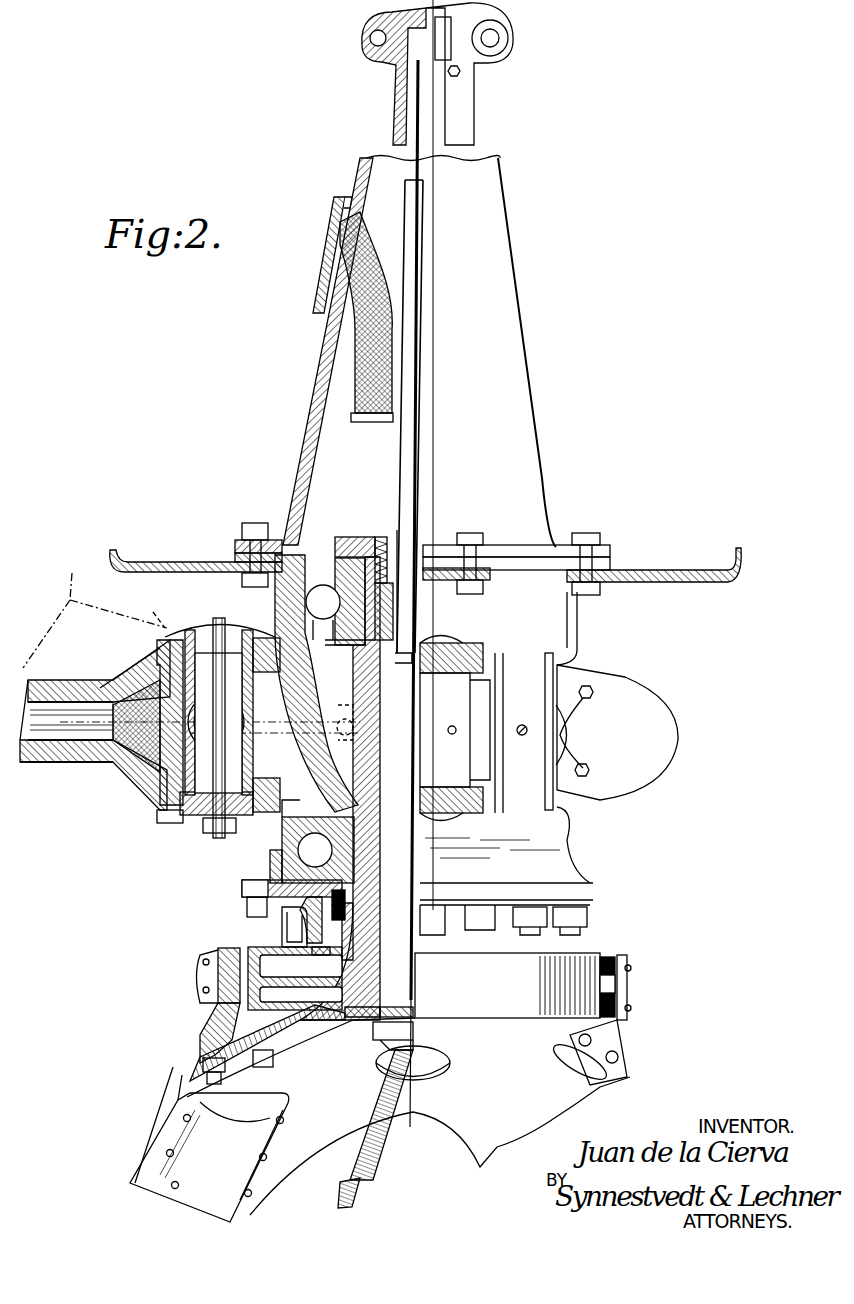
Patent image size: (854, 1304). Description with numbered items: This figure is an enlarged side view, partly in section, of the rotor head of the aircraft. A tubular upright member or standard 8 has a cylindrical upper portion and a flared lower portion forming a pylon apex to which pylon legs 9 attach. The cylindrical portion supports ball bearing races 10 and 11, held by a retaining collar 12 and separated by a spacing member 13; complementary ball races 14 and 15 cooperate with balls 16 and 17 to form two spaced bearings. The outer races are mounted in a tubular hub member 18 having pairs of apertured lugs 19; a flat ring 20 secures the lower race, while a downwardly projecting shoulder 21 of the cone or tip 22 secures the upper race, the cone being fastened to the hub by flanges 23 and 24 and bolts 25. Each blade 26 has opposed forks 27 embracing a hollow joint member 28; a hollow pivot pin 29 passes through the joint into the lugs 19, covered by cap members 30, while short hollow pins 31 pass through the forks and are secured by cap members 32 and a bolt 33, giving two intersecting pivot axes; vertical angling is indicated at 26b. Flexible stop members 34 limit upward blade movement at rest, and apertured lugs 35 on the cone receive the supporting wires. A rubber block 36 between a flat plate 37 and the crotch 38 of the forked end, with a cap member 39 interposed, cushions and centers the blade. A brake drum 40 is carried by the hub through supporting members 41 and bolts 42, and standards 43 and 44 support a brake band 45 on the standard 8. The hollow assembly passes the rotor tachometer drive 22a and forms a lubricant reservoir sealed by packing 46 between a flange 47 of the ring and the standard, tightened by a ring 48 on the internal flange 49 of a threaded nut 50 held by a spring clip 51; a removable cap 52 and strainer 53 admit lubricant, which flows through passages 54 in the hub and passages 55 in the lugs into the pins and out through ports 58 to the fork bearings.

The upright member or standard 8 is at (330, 1030).
The pylon struts or legs 9 is at (255, 1105).
The ball bearing race 10 is at (337, 560).
The ball bearing race 11 is at (355, 830).
The retaining collar or ring 12 is at (381, 537).
The spacing member 13 is at (350, 808).
The complementary ball race 14 is at (322, 595).
The complementary ball race 15 is at (270, 860).
The balls 16 is at (322, 640).
The balls 17 is at (315, 845).
The hub member 18 is at (322, 768).
The apertured lugs 19 is at (545, 660).
The flat ring 20 is at (355, 888).
The downwardly projecting shoulder 21 is at (290, 560).
The cone or tip 22 is at (467, 103).
The rotor tachometer drive 22a is at (420, 462).
The flange 23 is at (237, 546).
The flange 24 is at (235, 558).
The bolts 25 is at (255, 523).
The blade member 26 is at (33, 753).
The vertical angling of blade 26b is at (95, 610).
The apertured forks 27 is at (480, 650).
The hollow joint member 28 is at (128, 785).
The hollow pivot pin 29 is at (262, 742).
The cap members 30 is at (640, 700).
The hollow pivot pins 31 is at (216, 630).
The cap members 32 is at (257, 638).
The bolt 33 is at (219, 630).
The flexible stop members 34 is at (130, 560).
The apertured lugs 35 is at (370, 46).
The resilient block 36 is at (120, 762).
The flat plate 37 is at (170, 660).
The crotch or base portion 38 is at (112, 690).
The cap member 39 is at (95, 733).
The brake drum 40 is at (295, 978).
The supporting members 41 is at (282, 932).
The bolts 42 is at (243, 890).
The standard 43 is at (218, 1032).
The standard 44 is at (620, 1025).
The brake band 45 is at (515, 985).
The packing 46 is at (345, 895).
The downwardly extending flange 47 is at (345, 912).
The ring 48 is at (358, 958).
The internal flange 49 is at (376, 990).
The ring or nut 50 is at (318, 947).
The spring clip 51 is at (300, 915).
The removable cap 52 is at (320, 270).
The strainer 53 is at (378, 348).
The passages 54 is at (381, 700).
The passages 55 is at (345, 705).
The openings or ports 58 is at (165, 823).